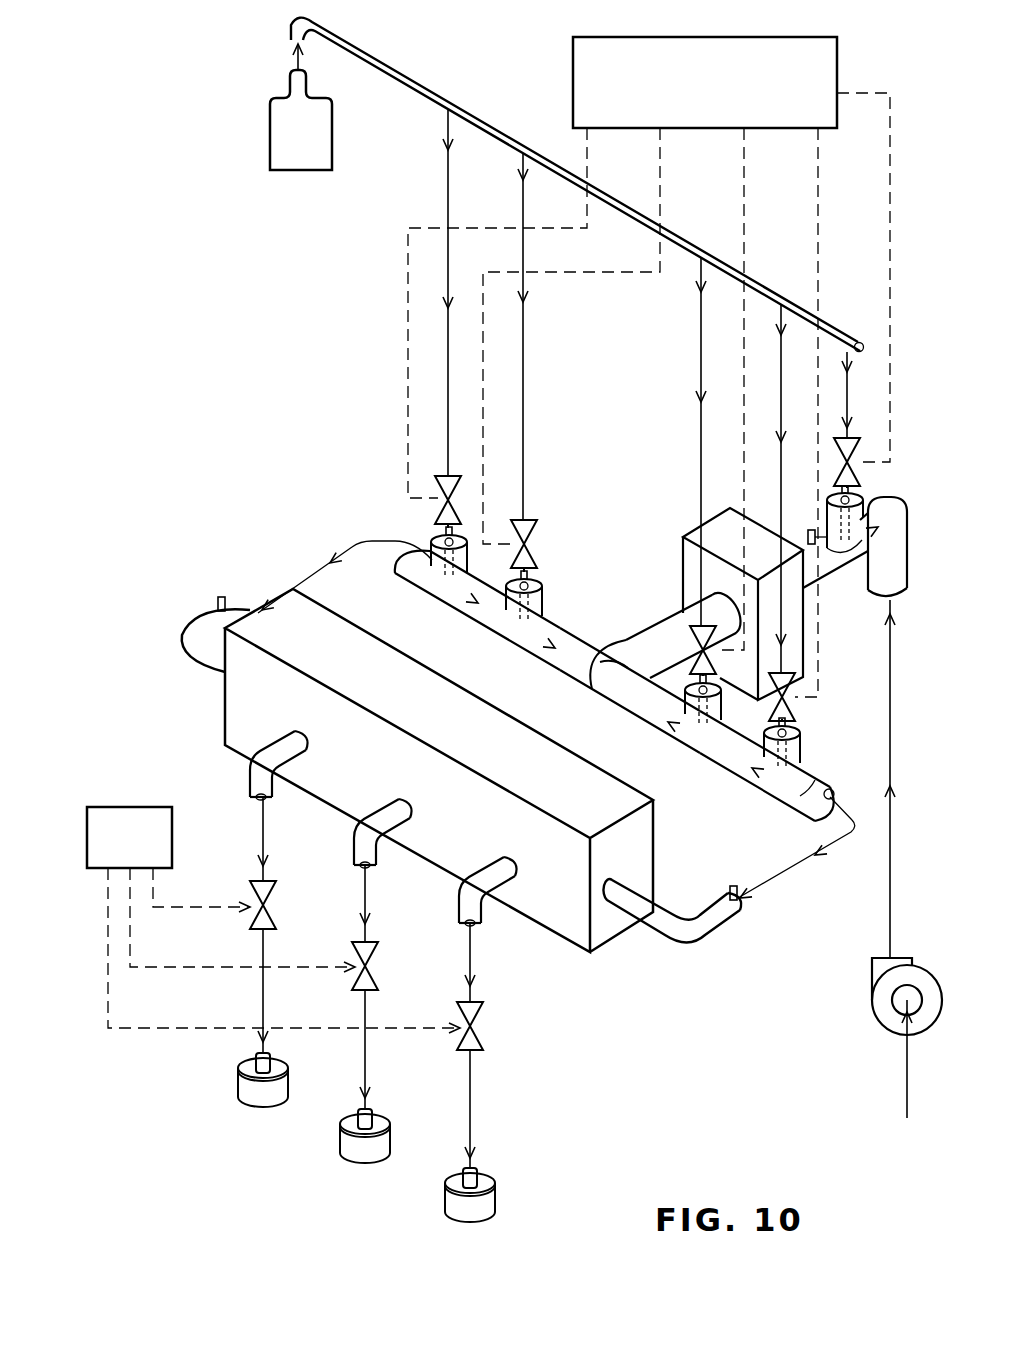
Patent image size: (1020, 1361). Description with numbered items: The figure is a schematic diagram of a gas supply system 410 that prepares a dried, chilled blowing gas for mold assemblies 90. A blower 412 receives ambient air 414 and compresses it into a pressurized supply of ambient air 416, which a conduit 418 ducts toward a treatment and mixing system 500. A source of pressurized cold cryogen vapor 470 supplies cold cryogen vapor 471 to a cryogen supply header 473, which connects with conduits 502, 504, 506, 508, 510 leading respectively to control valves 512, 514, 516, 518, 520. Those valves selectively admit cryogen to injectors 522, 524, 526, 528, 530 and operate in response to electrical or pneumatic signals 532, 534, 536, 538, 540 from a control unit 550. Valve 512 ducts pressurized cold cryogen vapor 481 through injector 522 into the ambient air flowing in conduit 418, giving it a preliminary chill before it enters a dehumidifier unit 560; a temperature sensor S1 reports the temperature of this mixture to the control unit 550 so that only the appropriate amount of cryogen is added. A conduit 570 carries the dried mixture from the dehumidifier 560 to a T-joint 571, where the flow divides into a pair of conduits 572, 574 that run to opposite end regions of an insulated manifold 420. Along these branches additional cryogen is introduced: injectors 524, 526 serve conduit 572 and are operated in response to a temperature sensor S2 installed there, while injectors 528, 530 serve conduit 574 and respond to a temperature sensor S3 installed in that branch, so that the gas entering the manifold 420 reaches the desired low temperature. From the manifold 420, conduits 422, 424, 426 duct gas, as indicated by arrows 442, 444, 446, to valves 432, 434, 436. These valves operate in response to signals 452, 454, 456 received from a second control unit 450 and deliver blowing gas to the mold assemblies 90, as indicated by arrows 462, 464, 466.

The gas supply system 410 is at (148, 132).
The source of pressurized cold cryogen vapor 470 is at (268, 100).
The cold cryogen vapor 471 is at (292, 60).
The cryogen supply header 473 is at (398, 32).
The control unit 550 is at (682, 34).
The signal 540 is at (588, 160).
The signal 538 is at (662, 193).
The signal 536 is at (746, 190).
The signal 534 is at (820, 172).
The signal 532 is at (891, 175).
The conduit 510 is at (450, 192).
The conduit 508 is at (525, 217).
The conduit 506 is at (701, 335).
The conduit 504 is at (781, 375).
The conduit 502 is at (848, 387).
The control valve 512 is at (860, 440).
The control valve 520 is at (436, 497).
The control valve 518 is at (537, 545).
The control valve 516 is at (711, 660).
The control valve 514 is at (796, 720).
The injector 522 is at (872, 502).
The conduit 418 is at (905, 563).
The pressurized cold cryogen vapor 481 is at (868, 558).
The pressurized supply of ambient air 416 is at (891, 836).
The blower 412 is at (938, 950).
The ambient air 414 is at (906, 1090).
The dehumidifier unit 560 is at (681, 523).
The treatment and mixing system 500 is at (343, 382).
The injector 530 is at (437, 590).
The injector 528 is at (522, 652).
The injector 526 is at (690, 748).
The injector 524 is at (790, 782).
The T-joint 571 is at (620, 616).
The conduit 570 is at (664, 626).
The conduit 574 is at (578, 670).
The conduit 572 is at (190, 630).
The insulated manifold 420 is at (655, 838).
The temperature sensor S1 is at (812, 528).
The temperature sensor S2 is at (736, 884).
The temperature sensor S3 is at (220, 602).
The control unit 450 is at (87, 838).
The signal 456 is at (196, 912).
The signal 454 is at (186, 972).
The signal 452 is at (200, 1033).
The conduit 426 is at (250, 783).
The conduit 424 is at (352, 858).
The conduit 422 is at (456, 910).
The arrow 446 is at (260, 832).
The arrow 444 is at (362, 893).
The arrow 442 is at (468, 965).
The valve 436 is at (250, 887).
The valve 434 is at (357, 950).
The valve 432 is at (462, 1015).
The arrow 466 is at (260, 1003).
The arrow 464 is at (364, 1076).
The arrow 462 is at (470, 1124).
The mold assembly 90 is at (283, 1066).